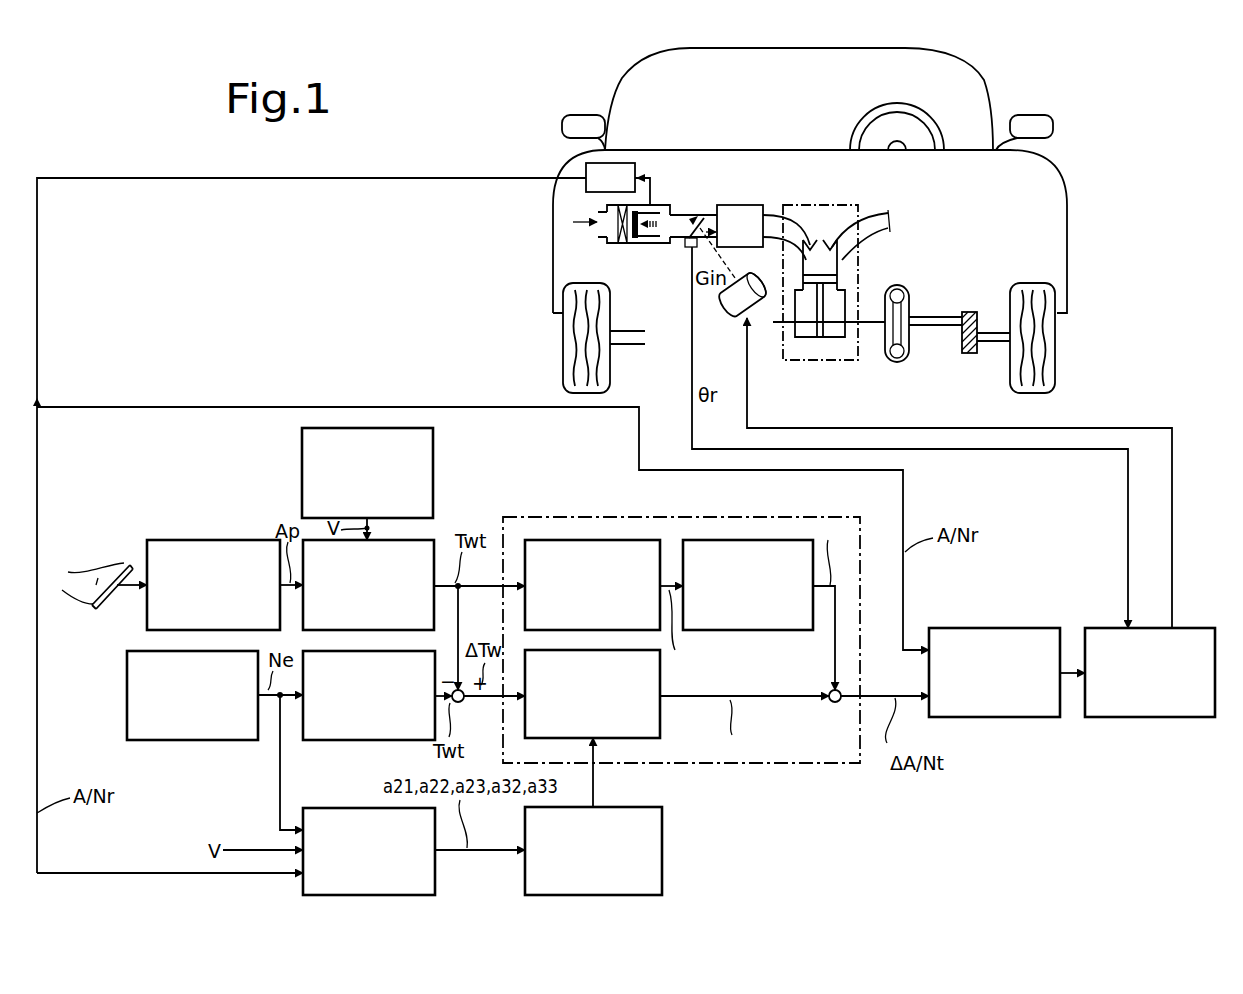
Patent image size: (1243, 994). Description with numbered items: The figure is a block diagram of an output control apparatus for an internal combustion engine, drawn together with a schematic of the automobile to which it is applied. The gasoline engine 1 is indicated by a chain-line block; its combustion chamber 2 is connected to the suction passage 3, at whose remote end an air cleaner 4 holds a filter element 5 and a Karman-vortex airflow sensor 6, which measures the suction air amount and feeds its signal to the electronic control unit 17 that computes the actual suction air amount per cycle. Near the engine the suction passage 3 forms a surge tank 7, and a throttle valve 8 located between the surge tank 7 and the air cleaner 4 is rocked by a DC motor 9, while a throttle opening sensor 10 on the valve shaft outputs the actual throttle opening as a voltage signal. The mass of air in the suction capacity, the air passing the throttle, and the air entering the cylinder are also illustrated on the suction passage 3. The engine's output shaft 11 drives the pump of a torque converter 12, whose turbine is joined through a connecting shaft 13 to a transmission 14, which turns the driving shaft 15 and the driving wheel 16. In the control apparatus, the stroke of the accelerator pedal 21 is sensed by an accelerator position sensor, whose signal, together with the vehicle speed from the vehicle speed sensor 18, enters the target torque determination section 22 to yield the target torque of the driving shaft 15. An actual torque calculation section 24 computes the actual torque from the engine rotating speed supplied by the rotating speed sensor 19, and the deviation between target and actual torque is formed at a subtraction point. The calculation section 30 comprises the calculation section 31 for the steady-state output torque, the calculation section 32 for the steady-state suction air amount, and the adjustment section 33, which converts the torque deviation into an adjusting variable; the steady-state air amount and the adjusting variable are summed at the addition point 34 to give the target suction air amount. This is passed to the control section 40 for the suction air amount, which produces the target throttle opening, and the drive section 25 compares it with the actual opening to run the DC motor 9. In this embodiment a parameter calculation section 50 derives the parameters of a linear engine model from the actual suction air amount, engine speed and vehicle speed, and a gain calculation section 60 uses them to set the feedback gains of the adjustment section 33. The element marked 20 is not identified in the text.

The gasoline engine 1 is at (826, 263).
The combustion chamber 2 is at (840, 263).
The suction passage 3 is at (711, 212).
The air cleaner 4 is at (655, 243).
The filter element 5 is at (613, 243).
The airflow sensor 6 is at (658, 213).
The surge tank 7 is at (745, 205).
The throttle valve 8 is at (694, 222).
The DC motor 9 is at (740, 302).
The throttle opening sensor 10 is at (687, 247).
The output shaft 11 is at (872, 333).
The torque converter 12 is at (900, 287).
The connecting shaft 13 is at (936, 316).
The transmission 14 is at (968, 312).
The driving shaft 15 is at (995, 344).
The driving wheel 16 is at (1056, 383).
The electronic control unit 17 is at (586, 172).
The vehicle speed sensor 18 is at (302, 466).
The rotating speed sensor 19 is at (127, 666).
The accelerator pedal 20 is at (127, 563).
The accelerator pedal 21 is at (203, 540).
The target torque determination section 22 is at (434, 545).
The actual torque calculation section 24 is at (325, 741).
The drive section 25 is at (1097, 628).
The calculation section for target suction air amount 30 is at (660, 517).
The calculation section for steady-state output torque 31 is at (599, 540).
The calculation section for steady-state suction air amount 32 is at (751, 540).
The adjustment section 33 is at (633, 742).
The addition point 34 is at (835, 705).
The control section for suction air amount 40 is at (985, 628).
The parameter calculation section 50 is at (436, 873).
The gain calculation section 60 is at (662, 862).